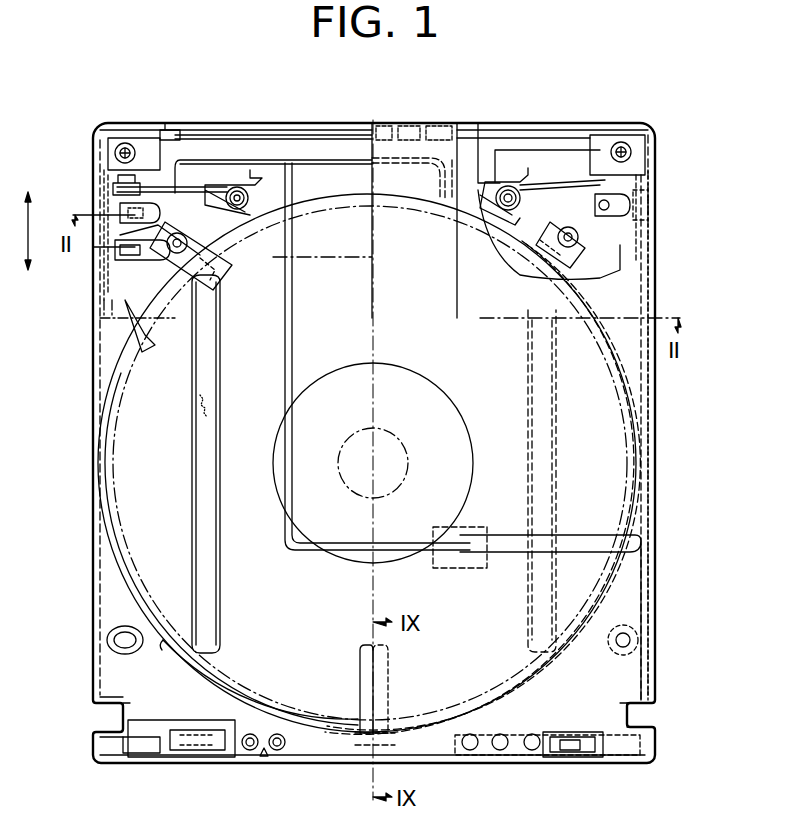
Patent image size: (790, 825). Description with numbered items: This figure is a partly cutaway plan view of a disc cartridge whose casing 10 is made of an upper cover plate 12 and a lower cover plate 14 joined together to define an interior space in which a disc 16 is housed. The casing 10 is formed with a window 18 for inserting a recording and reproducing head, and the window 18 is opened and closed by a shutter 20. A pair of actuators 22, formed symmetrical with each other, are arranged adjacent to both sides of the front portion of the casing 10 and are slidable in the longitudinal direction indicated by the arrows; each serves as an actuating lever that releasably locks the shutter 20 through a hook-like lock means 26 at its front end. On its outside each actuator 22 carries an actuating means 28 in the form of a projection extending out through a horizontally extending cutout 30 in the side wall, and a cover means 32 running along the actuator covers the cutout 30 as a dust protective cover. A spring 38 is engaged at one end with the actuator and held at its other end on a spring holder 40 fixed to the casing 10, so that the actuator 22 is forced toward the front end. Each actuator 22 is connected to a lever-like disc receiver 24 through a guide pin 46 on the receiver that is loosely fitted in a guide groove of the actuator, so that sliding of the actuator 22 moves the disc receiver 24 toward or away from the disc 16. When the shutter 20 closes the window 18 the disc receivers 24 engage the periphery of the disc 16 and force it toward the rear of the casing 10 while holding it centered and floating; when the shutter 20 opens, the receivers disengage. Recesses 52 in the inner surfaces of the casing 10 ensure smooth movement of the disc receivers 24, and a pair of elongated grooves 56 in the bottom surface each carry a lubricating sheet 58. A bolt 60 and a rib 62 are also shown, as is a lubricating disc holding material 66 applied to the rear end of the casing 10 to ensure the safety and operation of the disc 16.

The casing 10 is at (660, 120).
The upper cover plate 12 is at (652, 608).
The lower cover plate 14 is at (112, 676).
The disc 16 is at (100, 512).
The window 18 is at (416, 124).
The shutter 20 is at (447, 374).
The actuator 22 is at (115, 197).
The disc receiver 24 is at (227, 266).
The lock means 26 is at (167, 125).
The actuating means 28 is at (100, 200).
The cutout 30 is at (100, 275).
The cover means 32 is at (100, 297).
The spring 38 is at (208, 188).
The spring holder 40 is at (506, 186).
The guide pin 46 is at (182, 255).
The recess 52 is at (222, 270).
The elongated groove 56 is at (195, 494).
The sheet 58 is at (195, 448).
The bolt 60 is at (125, 142).
The rib 62 is at (118, 336).
The disc holding material 66 is at (360, 686).